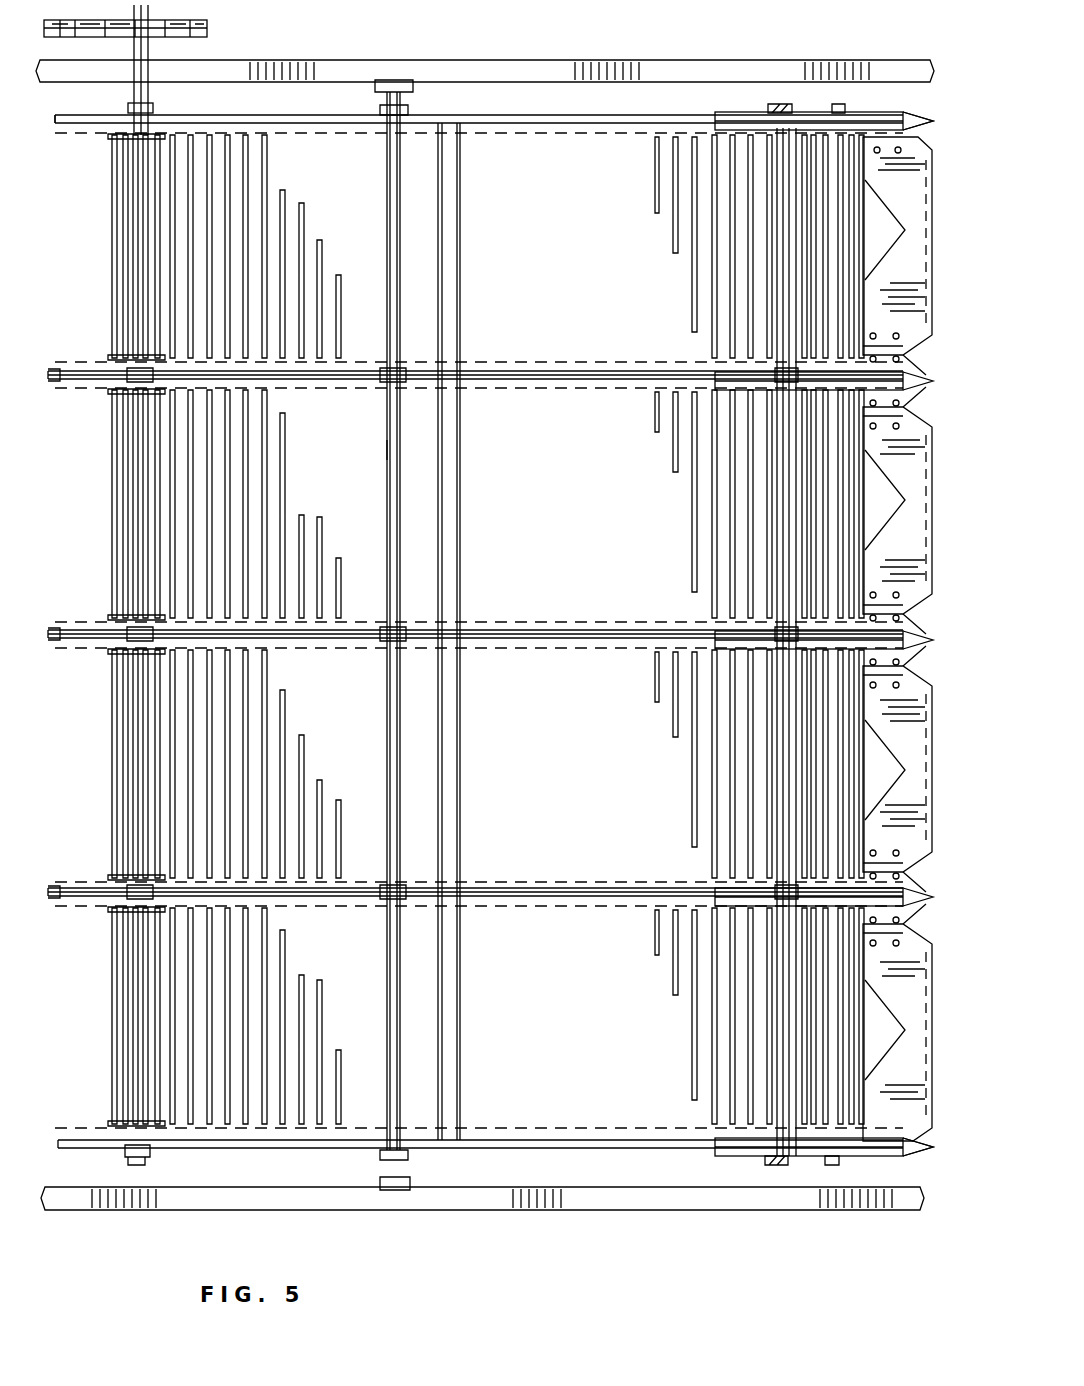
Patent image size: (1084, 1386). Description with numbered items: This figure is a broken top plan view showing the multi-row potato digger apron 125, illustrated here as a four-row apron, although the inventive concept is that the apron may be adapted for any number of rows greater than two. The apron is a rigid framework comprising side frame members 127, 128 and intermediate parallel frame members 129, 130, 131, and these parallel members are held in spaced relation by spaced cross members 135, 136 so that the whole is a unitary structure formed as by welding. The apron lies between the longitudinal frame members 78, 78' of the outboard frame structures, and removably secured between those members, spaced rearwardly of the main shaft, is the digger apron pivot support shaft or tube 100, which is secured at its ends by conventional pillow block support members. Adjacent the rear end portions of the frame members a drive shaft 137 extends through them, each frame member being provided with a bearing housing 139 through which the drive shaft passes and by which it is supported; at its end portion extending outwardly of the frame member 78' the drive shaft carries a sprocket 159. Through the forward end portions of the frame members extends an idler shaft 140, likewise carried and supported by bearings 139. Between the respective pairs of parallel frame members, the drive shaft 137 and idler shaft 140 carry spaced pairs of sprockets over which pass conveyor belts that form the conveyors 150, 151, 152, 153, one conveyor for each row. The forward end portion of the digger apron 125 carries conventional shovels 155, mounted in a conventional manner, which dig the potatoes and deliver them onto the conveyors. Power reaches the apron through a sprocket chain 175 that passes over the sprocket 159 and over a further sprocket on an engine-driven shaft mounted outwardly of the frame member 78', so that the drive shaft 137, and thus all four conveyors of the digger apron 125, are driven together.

The longitudinal frame member 78 is at (482, 1226).
The longitudinal frame member 78' is at (485, 44).
The digger apron pivot support shaft or tube 100 is at (388, 452).
The multi-row potato digger apron 125 is at (643, 1175).
The side frame member 127 is at (590, 122).
The side frame member 128 is at (575, 1150).
The intermediate parallel frame member 129 is at (612, 390).
The intermediate parallel frame member 130 is at (612, 650).
The intermediate parallel frame member 131 is at (615, 903).
The cross member 135 is at (452, 195).
The cross member 136 is at (785, 1063).
The drive shaft 137 is at (138, 493).
The bearing housing 139 is at (152, 109).
The idler shaft 140 is at (833, 200).
The conveyor 150 is at (212, 186).
The conveyor 151 is at (244, 517).
The conveyor 152 is at (248, 736).
The conveyor 153 is at (248, 978).
The shovel 155 is at (917, 157).
The sprocket 159 is at (182, 22).
The sprocket chain 175 is at (225, 70).